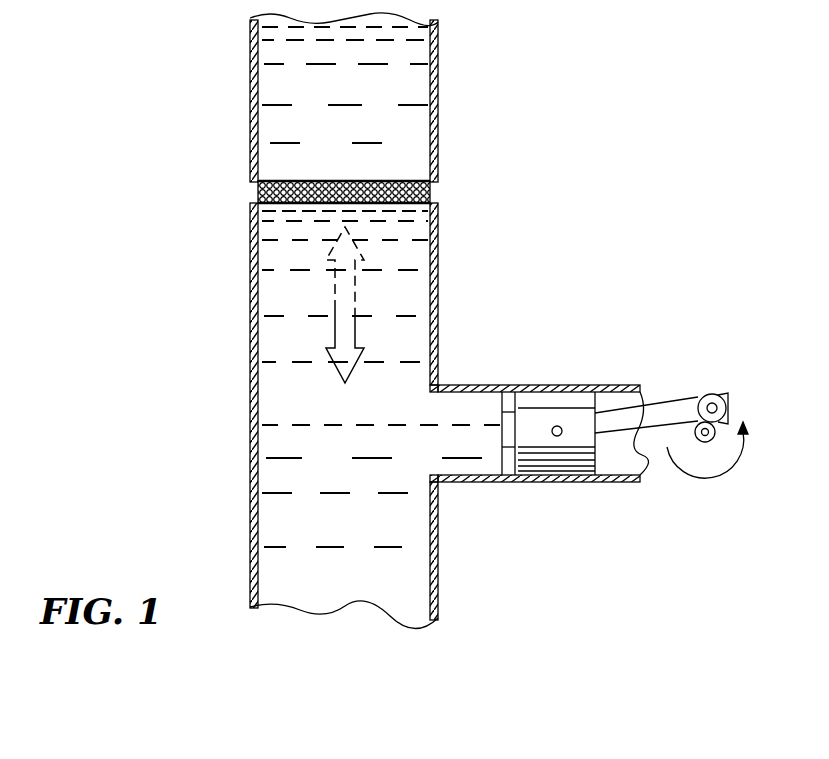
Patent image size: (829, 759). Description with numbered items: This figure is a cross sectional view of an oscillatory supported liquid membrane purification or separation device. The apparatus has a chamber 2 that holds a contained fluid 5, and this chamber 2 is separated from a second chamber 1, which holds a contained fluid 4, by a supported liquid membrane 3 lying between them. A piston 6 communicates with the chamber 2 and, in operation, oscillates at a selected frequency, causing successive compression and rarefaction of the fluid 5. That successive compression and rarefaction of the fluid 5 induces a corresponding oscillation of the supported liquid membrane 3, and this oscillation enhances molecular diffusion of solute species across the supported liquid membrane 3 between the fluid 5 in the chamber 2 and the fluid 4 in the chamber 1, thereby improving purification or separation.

The chamber 1 is at (242, 104).
The chamber 2 is at (240, 274).
The supported liquid membrane 3 is at (240, 194).
The fluid 4 is at (406, 100).
The fluid 5 is at (400, 302).
The piston 6 is at (560, 407).